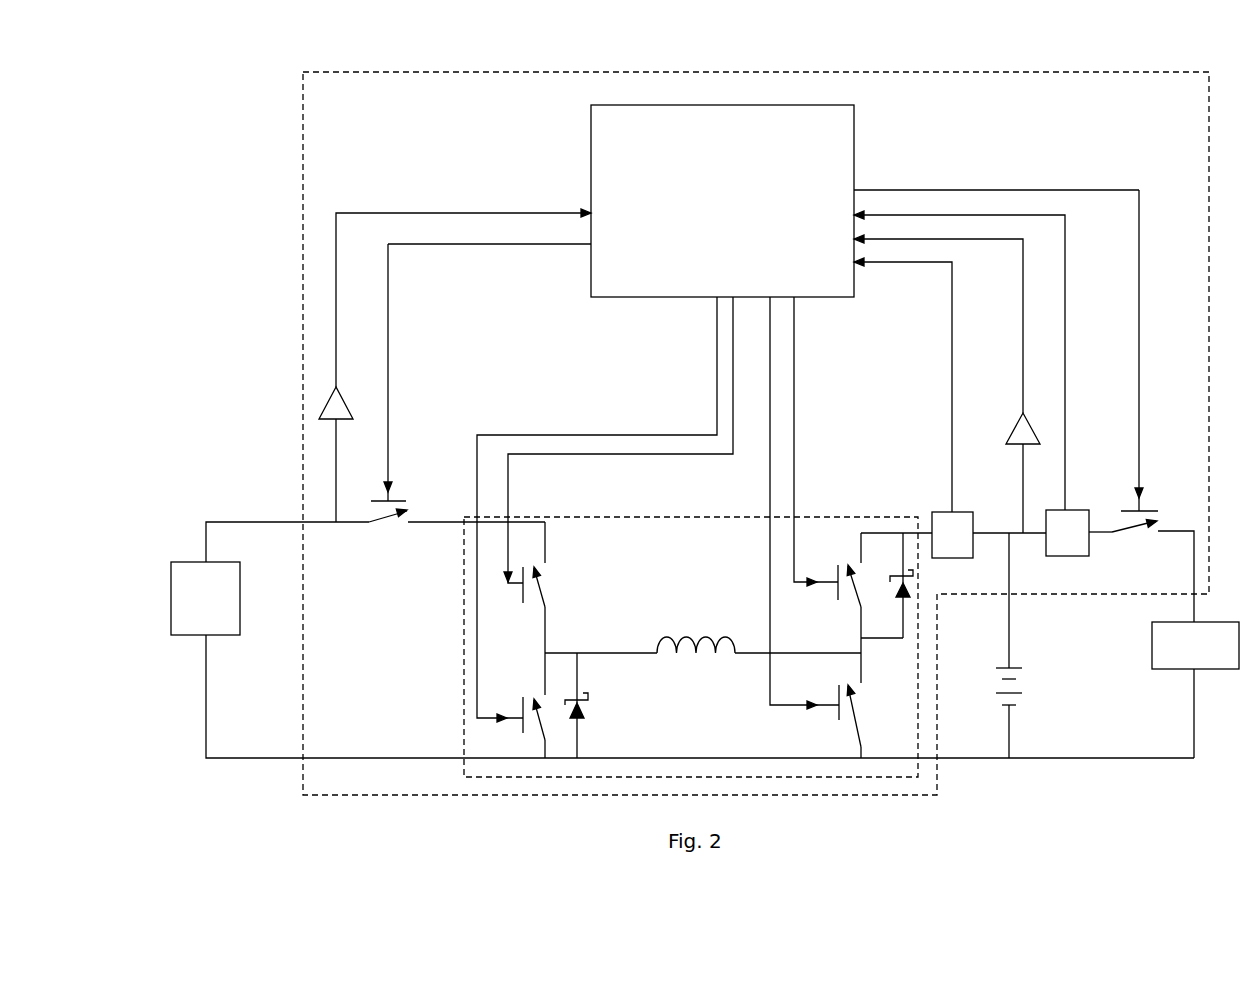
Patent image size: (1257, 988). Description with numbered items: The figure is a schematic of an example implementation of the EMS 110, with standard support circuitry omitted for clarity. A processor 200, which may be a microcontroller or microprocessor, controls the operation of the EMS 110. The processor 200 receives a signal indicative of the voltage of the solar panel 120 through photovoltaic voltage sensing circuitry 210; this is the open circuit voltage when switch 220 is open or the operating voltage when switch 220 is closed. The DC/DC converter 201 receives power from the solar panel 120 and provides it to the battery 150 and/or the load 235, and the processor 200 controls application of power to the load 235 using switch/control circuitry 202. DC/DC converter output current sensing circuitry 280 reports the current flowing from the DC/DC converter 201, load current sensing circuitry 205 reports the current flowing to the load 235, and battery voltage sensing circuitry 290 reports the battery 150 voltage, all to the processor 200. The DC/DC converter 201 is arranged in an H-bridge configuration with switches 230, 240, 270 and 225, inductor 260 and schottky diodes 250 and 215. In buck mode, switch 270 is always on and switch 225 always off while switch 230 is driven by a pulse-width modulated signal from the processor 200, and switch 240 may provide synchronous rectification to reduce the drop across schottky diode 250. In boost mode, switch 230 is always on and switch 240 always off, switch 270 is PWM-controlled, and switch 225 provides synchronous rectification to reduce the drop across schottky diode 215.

The EMS 110 is at (358, 72).
The solar panel 120 is at (165, 570).
The battery 150 is at (1022, 688).
The processor 200 is at (590, 173).
The DC/DC converter 201 is at (462, 636).
The switch/control circuitry 202 is at (1148, 500).
The load current sensing circuitry 205 is at (1078, 507).
The photovoltaic voltage sensing circuitry 210 is at (350, 395).
The schottky diode 215 is at (912, 584).
The switch 220 is at (395, 530).
The switch 225 is at (863, 706).
The switch 230 is at (545, 579).
The load 235 is at (1168, 675).
The switch 240 is at (520, 698).
The schottky diode 250 is at (592, 703).
The inductor 260 is at (700, 633).
The switch 270 is at (844, 555).
The DC/DC converter output current sensing circuitry 280 is at (932, 508).
The battery voltage sensing circuitry 290 is at (1010, 417).